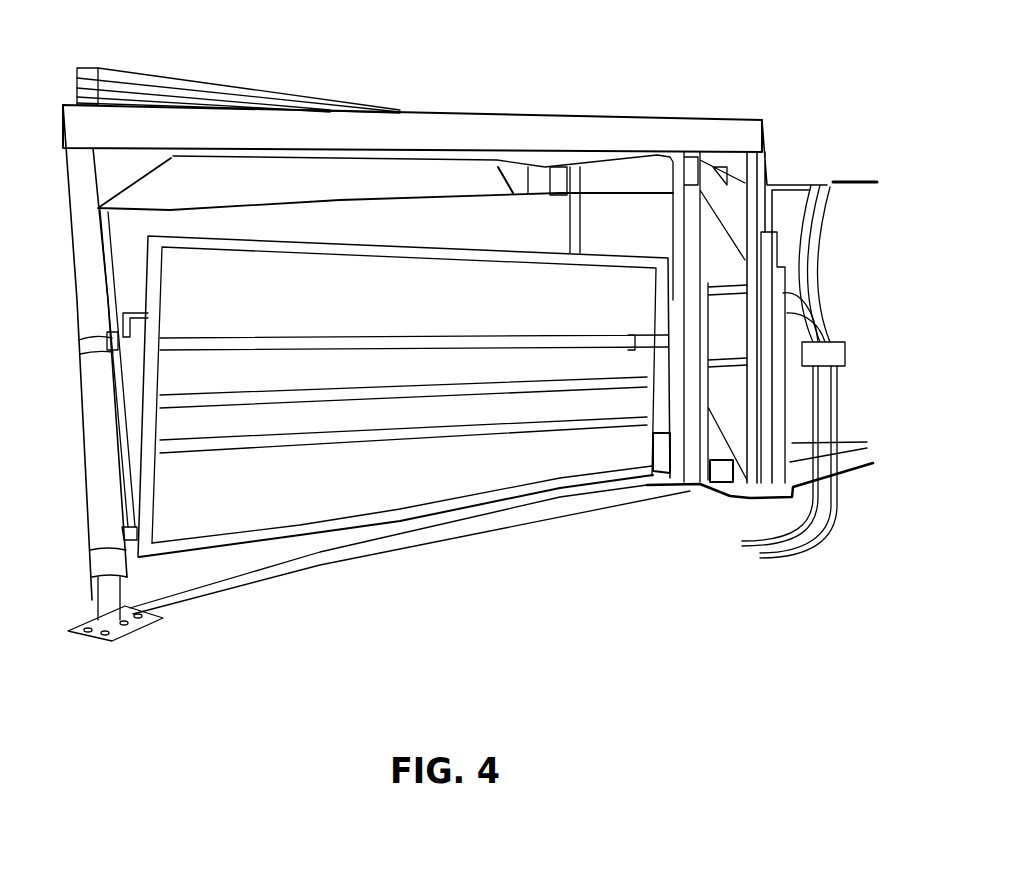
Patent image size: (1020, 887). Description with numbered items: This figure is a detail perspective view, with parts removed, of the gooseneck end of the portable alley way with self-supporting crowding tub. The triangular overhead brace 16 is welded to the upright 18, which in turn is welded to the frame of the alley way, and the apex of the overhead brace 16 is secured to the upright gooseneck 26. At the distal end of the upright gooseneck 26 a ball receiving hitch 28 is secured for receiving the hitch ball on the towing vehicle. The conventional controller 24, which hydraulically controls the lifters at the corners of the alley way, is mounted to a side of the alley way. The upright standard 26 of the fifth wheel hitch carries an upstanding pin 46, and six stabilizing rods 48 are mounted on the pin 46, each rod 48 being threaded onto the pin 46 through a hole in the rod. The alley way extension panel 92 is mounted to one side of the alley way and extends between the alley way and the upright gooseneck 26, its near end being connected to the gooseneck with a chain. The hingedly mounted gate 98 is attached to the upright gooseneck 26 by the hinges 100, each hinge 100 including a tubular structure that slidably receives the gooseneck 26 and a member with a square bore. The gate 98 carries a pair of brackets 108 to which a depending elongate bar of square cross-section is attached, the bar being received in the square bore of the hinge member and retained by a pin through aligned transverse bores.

The triangular overhead brace 16 is at (583, 128).
The upright 18 is at (755, 165).
The controller 24 is at (837, 345).
The upright gooseneck 26 is at (98, 518).
The ball receiving hitch 28 is at (102, 582).
The upstanding pin 46 is at (75, 68).
The stabilizing rods 48 is at (173, 62).
The alley way extension panel 92 is at (384, 222).
The hingedly mounted gate 98 is at (268, 290).
The hinge 100 is at (90, 343).
The brackets 108 is at (128, 522).